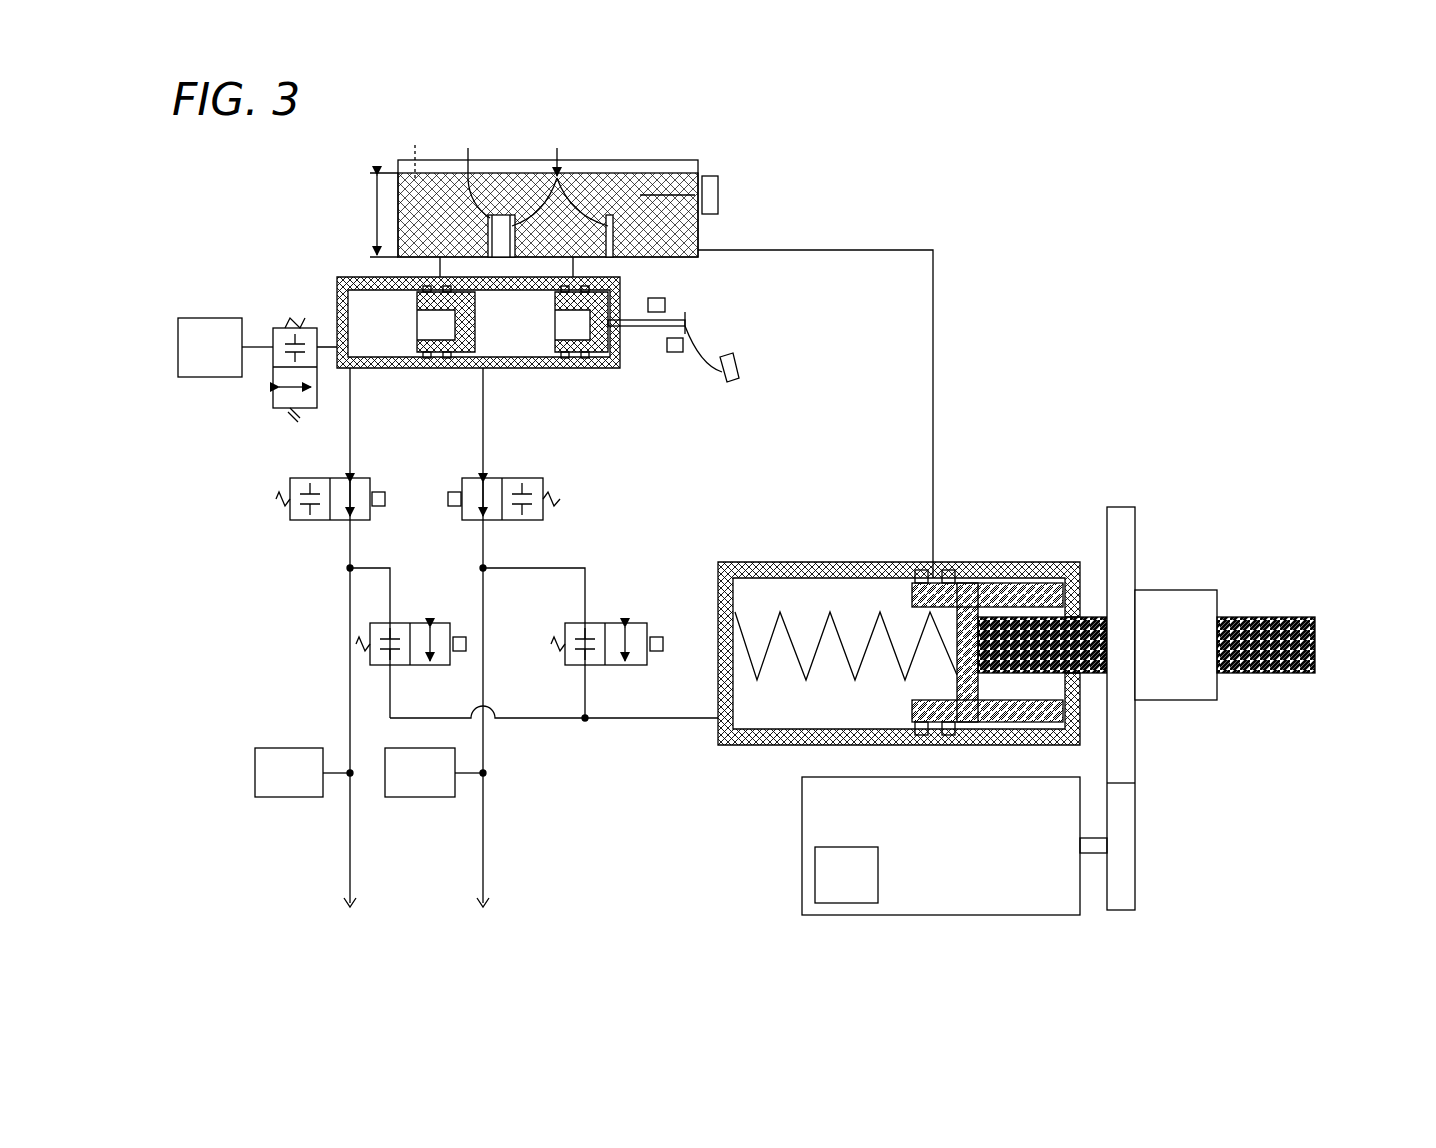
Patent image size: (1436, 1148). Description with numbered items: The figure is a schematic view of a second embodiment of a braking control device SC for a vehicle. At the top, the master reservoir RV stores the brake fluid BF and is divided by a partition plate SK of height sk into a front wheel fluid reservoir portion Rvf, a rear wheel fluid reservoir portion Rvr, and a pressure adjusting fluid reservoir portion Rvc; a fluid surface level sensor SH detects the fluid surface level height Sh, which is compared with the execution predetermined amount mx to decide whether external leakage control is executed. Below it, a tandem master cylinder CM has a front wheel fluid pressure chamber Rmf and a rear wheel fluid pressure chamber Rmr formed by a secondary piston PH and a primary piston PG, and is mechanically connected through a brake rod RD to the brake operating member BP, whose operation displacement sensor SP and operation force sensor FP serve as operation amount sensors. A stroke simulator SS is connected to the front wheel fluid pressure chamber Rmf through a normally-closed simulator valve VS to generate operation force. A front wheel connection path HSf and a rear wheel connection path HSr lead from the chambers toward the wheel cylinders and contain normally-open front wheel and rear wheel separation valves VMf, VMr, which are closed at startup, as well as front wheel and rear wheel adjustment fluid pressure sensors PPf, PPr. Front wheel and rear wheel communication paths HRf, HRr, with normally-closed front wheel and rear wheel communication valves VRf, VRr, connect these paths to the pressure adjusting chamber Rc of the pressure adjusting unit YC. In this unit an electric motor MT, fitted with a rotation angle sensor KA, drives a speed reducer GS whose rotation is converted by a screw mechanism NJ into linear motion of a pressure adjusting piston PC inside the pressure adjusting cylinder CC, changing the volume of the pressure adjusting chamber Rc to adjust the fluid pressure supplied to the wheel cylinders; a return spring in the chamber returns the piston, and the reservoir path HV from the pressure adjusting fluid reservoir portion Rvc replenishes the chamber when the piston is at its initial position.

The master reservoir RV is at (633, 162).
The front wheel fluid reservoir portion Rvf is at (444, 215).
The rear wheel fluid reservoir portion Rvr is at (533, 236).
The pressure adjusting fluid reservoir portion Rvc is at (641, 236).
The fluid surface level height Sh is at (369, 215).
The brake fluid BF is at (414, 148).
The height of the partition plate sk is at (469, 168).
The partition plate SK is at (560, 172).
The execution predetermined amount mx is at (646, 199).
The fluid surface level sensor SH is at (718, 195).
The reservoir path HV is at (933, 425).
The braking control device SC is at (1115, 435).
The master cylinder CM is at (343, 278).
The front wheel fluid pressure chamber Rmf is at (382, 323).
The rear wheel fluid pressure chamber Rmr is at (515, 323).
The secondary piston PH is at (455, 358).
The primary piston PG is at (575, 358).
The brake rod RD is at (630, 330).
The operation displacement sensor SP is at (675, 320).
The operation force sensor FP is at (675, 352).
The brake operating member BP is at (732, 354).
The stroke simulator SS is at (225, 347).
The simulator valve VS is at (283, 325).
The front wheel connection path HSf is at (352, 380).
The rear wheel connection path HSr is at (485, 380).
The front wheel separation valve VMf is at (355, 478).
The rear wheel separation valve VMr is at (490, 478).
The front wheel communication path HRf is at (360, 568).
The rear wheel communication path HRr is at (573, 568).
The front wheel communication valve VRf is at (405, 623).
The rear wheel communication valve VRr is at (617, 623).
The front wheel adjustment fluid pressure sensor PPf is at (304, 772).
The rear wheel adjustment fluid pressure sensor PPr is at (435, 772).
The pressure adjusting cylinder CC is at (797, 562).
The pressure adjusting chamber Rc is at (873, 600).
The pressure adjusting piston PC is at (912, 710).
The screw mechanism NJ is at (1158, 590).
The speed reducer GS is at (1132, 772).
The pressure adjusting unit YC is at (1240, 775).
The electric motor MT is at (954, 846).
The rotation angle sensor KA is at (846, 875).